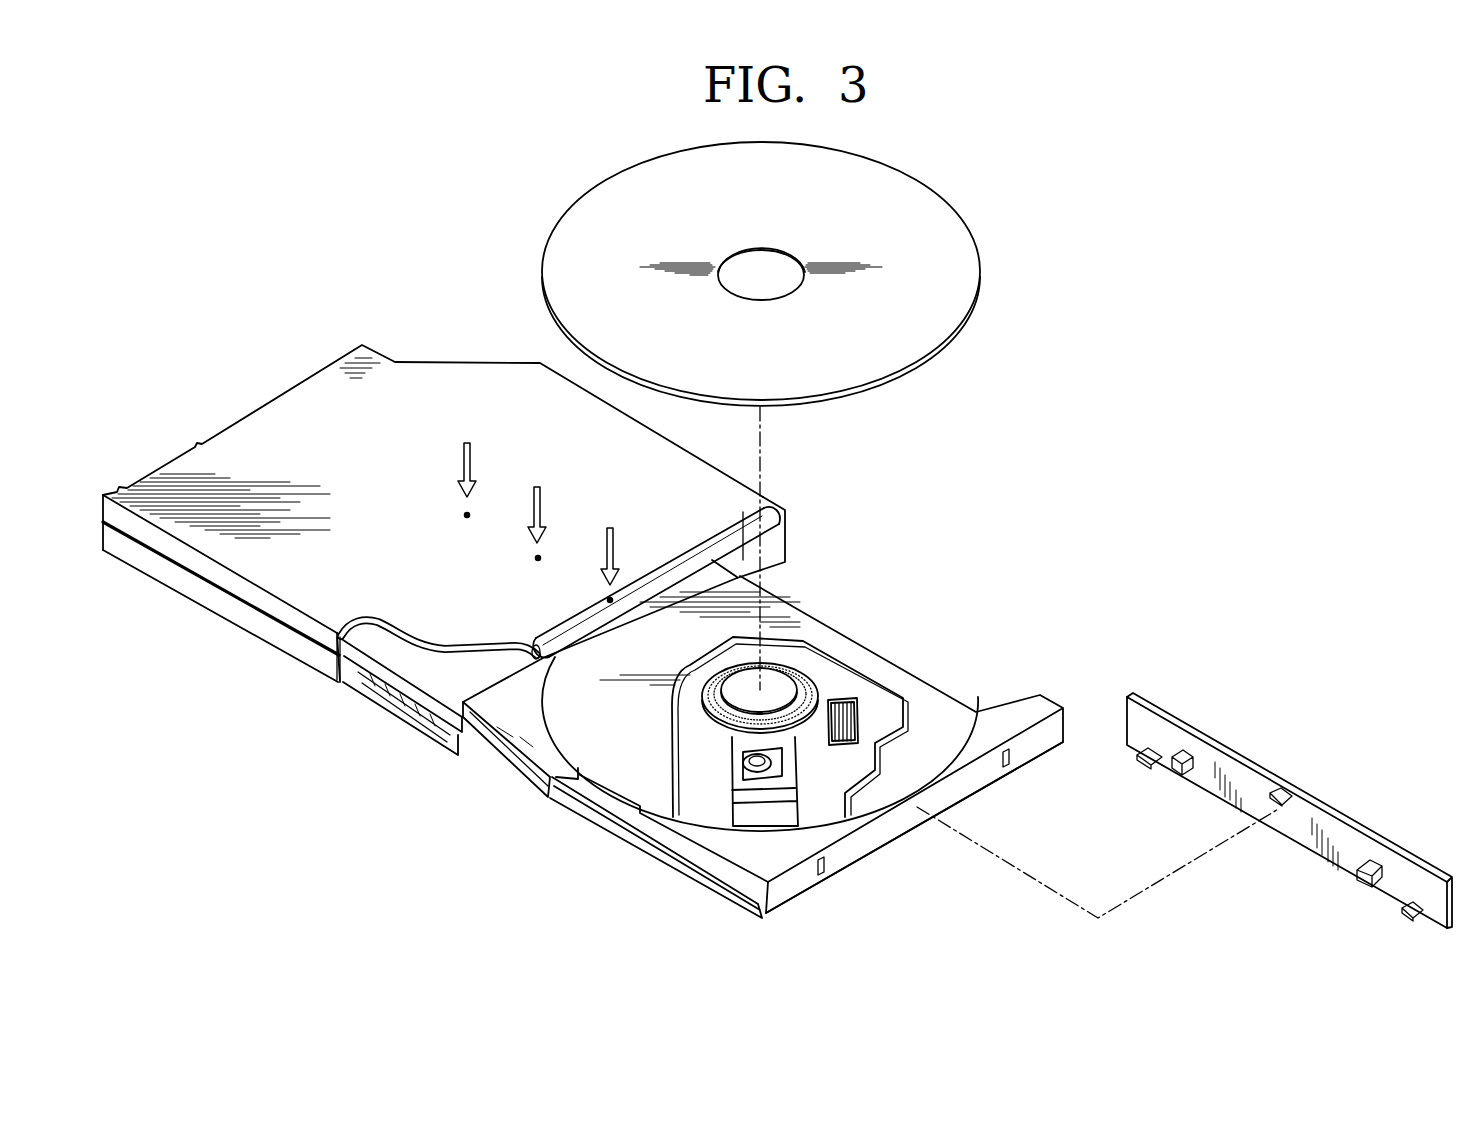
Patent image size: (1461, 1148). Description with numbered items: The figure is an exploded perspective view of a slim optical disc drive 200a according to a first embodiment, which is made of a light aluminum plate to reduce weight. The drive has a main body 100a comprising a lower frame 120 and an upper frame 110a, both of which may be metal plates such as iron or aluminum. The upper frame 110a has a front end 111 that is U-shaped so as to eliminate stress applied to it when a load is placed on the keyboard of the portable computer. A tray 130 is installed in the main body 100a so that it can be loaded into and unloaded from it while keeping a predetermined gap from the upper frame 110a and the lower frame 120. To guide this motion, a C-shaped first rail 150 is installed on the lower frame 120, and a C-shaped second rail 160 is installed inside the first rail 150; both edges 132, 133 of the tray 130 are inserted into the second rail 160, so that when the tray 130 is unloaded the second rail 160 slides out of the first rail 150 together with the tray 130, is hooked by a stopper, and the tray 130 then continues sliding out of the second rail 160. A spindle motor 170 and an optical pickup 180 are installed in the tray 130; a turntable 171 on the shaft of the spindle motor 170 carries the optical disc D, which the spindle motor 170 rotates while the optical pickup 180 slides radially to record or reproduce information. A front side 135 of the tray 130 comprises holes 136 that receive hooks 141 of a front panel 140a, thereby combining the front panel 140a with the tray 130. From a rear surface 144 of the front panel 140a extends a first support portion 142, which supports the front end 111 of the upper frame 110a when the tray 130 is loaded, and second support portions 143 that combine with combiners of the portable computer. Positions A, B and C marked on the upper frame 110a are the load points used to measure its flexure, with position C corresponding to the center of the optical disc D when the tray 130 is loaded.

The slim optical disc drive 200a is at (453, 197).
The main body 100a is at (233, 412).
The upper frame 110a is at (205, 567).
The lower frame 120 is at (212, 597).
The front end 111 is at (765, 497).
The tray 130 is at (582, 848).
The edge 132 is at (593, 803).
The edge 133 is at (897, 668).
The front side 135 is at (793, 887).
The holes 136 is at (1003, 770).
The first rail 150 is at (367, 675).
The second rail 160 is at (512, 753).
The spindle motor 170 is at (815, 690).
The turntable 171 is at (800, 672).
The optical pickup 180 is at (743, 755).
The front panel 140a is at (1117, 712).
The hooks 141 is at (1357, 873).
The first support portion 142 is at (1280, 788).
The second support portions 143 is at (1405, 910).
The rear surface 144 is at (1298, 830).
The optical disc D is at (908, 217).
The position A is at (619, 565).
The position B is at (546, 524).
The position C is at (476, 480).